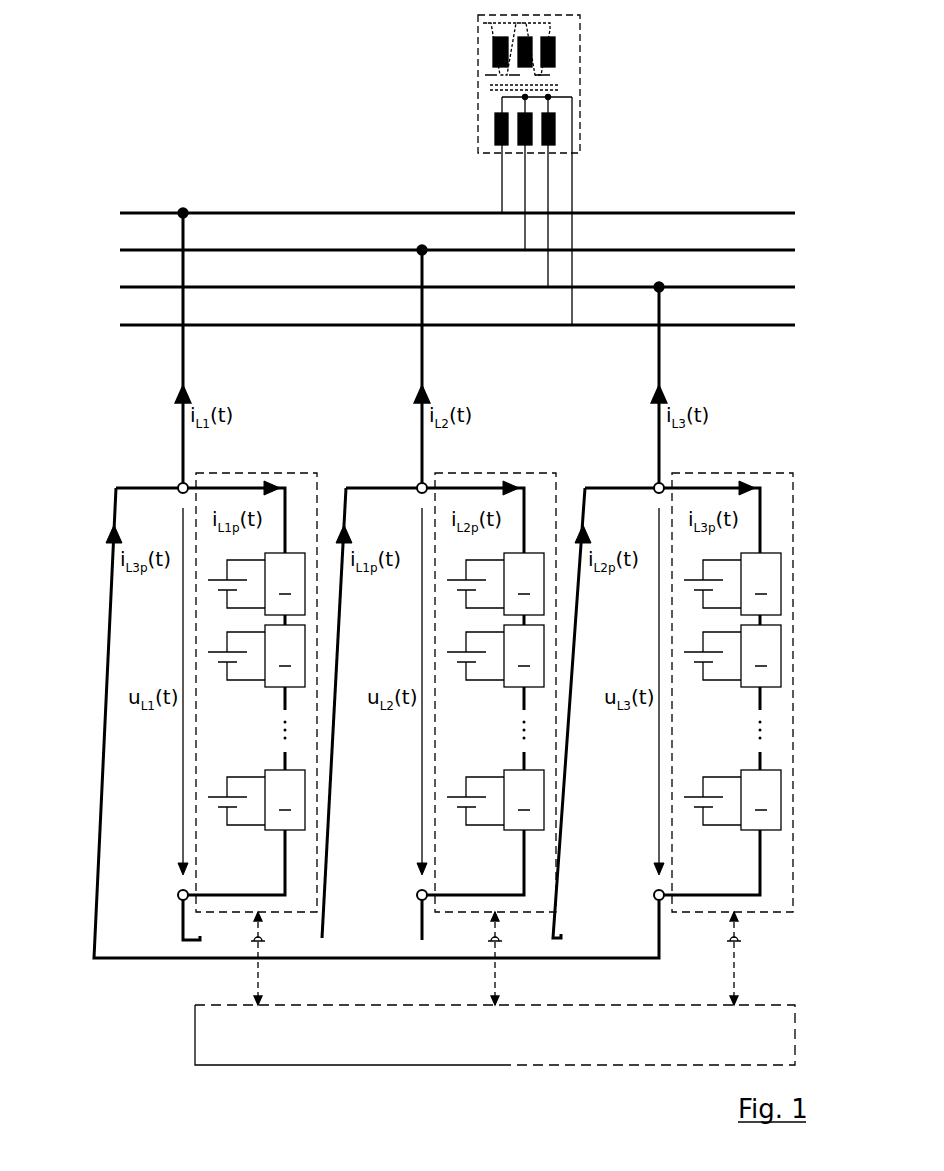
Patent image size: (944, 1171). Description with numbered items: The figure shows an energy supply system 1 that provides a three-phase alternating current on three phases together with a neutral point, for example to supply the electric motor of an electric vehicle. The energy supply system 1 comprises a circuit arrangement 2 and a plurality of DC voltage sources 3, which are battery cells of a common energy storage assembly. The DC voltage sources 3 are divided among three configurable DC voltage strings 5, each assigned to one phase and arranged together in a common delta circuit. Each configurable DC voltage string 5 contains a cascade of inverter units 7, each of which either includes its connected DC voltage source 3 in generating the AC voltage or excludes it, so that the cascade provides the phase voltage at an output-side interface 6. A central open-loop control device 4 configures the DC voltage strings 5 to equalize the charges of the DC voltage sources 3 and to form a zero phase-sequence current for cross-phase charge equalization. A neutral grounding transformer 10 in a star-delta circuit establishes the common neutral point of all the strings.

The energy supply system 1 is at (148, 52).
The circuit arrangement 2 is at (425, 97).
The DC voltage source 3 is at (233, 687).
The open-loop control device 4 is at (500, 1050).
The configurable DC voltage string 5 is at (277, 473).
The output-side interface 6 is at (173, 478).
The inverter unit 7 is at (523, 691).
The neutral grounding transformer 10 is at (580, 119).